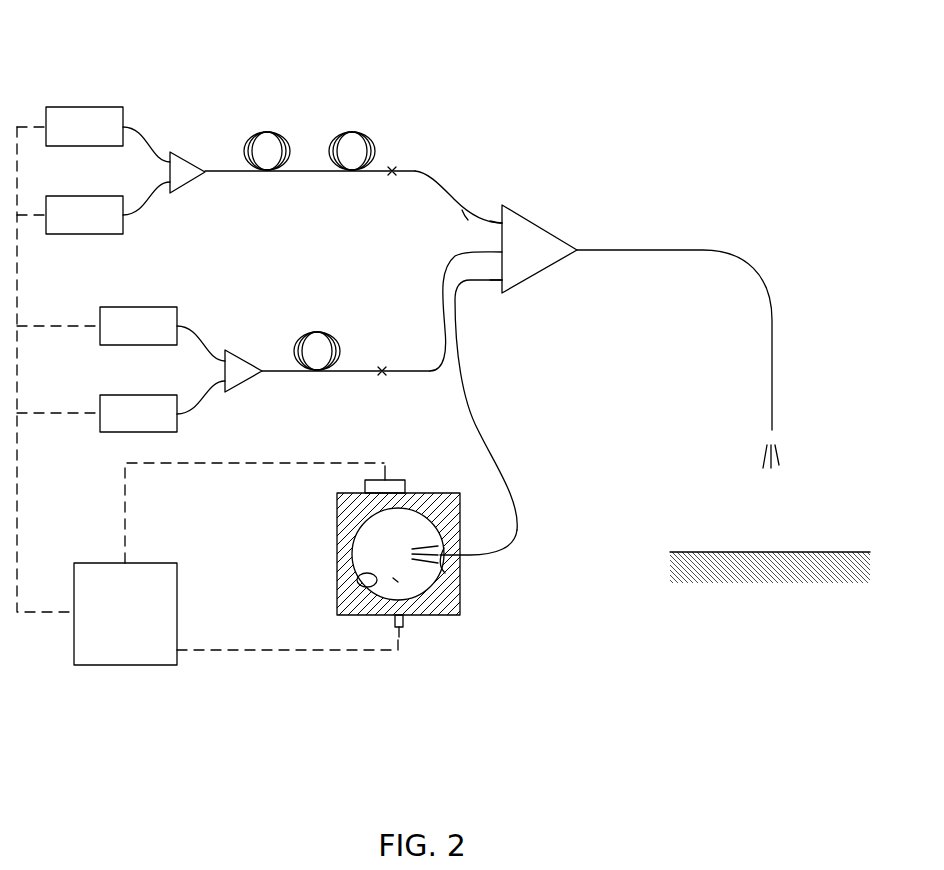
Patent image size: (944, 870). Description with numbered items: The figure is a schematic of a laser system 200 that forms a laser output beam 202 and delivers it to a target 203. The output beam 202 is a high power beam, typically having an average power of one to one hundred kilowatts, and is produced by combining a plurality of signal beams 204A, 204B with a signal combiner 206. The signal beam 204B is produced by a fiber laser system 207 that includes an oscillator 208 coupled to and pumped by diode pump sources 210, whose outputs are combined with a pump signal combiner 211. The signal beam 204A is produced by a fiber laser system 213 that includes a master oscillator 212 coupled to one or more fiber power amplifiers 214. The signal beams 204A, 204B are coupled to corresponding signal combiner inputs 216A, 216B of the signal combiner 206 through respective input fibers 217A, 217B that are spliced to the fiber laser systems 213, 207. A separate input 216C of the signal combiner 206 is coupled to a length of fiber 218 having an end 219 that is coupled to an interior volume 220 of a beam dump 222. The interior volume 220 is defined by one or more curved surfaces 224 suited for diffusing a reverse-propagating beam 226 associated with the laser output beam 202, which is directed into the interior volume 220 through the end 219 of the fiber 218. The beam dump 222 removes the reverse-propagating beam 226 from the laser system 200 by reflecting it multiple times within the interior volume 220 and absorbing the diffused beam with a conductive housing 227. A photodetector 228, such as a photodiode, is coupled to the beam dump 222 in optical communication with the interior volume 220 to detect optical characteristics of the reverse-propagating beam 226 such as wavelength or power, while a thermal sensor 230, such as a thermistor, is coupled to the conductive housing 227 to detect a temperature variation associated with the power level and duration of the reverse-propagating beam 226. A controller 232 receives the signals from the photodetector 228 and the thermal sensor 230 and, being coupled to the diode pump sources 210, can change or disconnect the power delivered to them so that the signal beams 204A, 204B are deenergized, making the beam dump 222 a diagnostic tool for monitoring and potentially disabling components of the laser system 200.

The laser system 200 is at (616, 74).
The laser output beam 202 is at (780, 461).
The target 203 is at (750, 551).
The signal beam 204A is at (426, 189).
The signal beam 204B is at (421, 266).
The signal combiner 206 is at (539, 249).
The fiber laser system 207 is at (257, 242).
The oscillator 208 is at (315, 319).
The diode pump sources 210 is at (135, 269).
The pump signal combiner 211 is at (178, 168).
The master oscillator 212 is at (284, 121).
The fiber laser system 213 is at (257, 43).
The fiber power amplifiers 214 is at (373, 127).
The signal combiner input 216A is at (492, 222).
The signal combiner input 216B is at (465, 218).
The separate input 216C is at (490, 282).
The input fiber 217A is at (432, 178).
The input fiber 217B is at (428, 375).
The length of fiber 218 is at (478, 415).
The end 219 is at (460, 578).
The interior volume 220 is at (393, 578).
The beam dump 222 is at (460, 520).
The curved surfaces 224 is at (360, 590).
The reverse-propagating beam 226 is at (418, 548).
The conductive housing 227 is at (337, 530).
The photodetector 228 is at (403, 628).
The thermal sensor 230 is at (365, 486).
The controller 232 is at (207, 396).